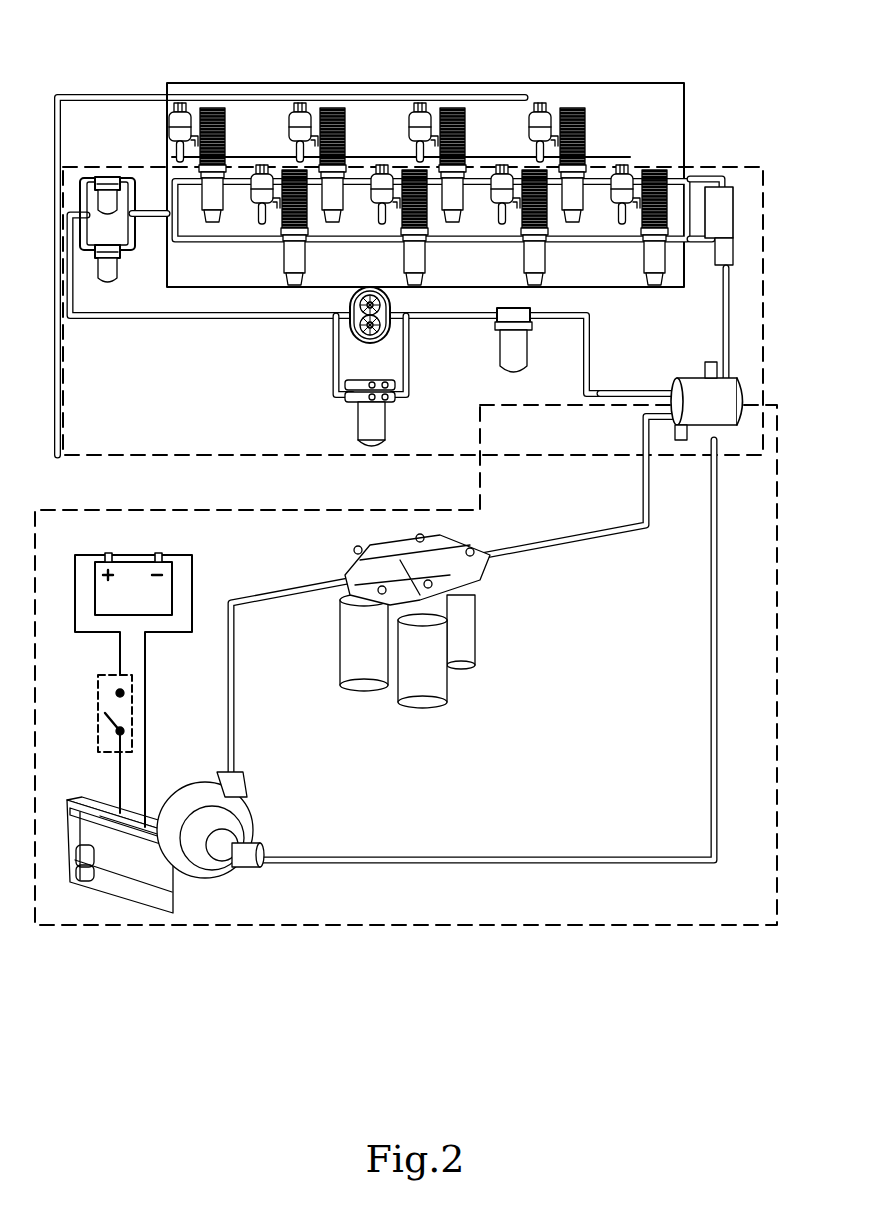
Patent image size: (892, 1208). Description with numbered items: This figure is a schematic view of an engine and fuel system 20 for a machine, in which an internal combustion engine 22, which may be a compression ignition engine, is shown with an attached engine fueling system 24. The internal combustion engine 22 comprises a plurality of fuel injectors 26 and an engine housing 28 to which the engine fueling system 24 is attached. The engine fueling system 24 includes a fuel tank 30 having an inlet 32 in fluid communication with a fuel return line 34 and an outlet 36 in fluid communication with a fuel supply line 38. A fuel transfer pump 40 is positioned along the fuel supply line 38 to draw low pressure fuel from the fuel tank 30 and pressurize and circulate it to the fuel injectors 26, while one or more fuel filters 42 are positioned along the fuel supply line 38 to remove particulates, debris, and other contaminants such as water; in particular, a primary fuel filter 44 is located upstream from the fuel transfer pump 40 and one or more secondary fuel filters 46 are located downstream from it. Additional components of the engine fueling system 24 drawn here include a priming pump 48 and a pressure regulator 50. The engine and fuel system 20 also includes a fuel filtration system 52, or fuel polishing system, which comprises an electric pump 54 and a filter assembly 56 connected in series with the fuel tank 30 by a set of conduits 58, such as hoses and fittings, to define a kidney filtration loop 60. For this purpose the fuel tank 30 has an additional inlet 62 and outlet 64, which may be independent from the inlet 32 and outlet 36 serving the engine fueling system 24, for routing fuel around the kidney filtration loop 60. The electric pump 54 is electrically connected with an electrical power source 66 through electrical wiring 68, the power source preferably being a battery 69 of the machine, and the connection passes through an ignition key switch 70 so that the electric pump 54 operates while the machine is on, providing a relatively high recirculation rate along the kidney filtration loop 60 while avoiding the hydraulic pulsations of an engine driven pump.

The engine and fuel system 20 is at (806, 173).
The internal combustion engine 22 is at (675, 52).
The engine fueling system 24 is at (763, 250).
The fuel injectors 26 is at (180, 103).
The engine housing 28 is at (619, 83).
The fuel tank 30 is at (745, 388).
The inlet 32 is at (740, 366).
The fuel return line 34 is at (733, 300).
The outlet 36 is at (660, 383).
The fuel supply line 38 is at (268, 319).
The fuel transfer pump 40 is at (362, 343).
The fuel filters 42 is at (95, 190).
The primary fuel filter 44 is at (530, 355).
The secondary fuel filters 46 is at (87, 207).
The priming pump 48 is at (356, 428).
The pressure regulator 50 is at (735, 212).
The fuel filtration system 52 is at (777, 600).
The electric pump 54 is at (246, 816).
The filter assembly 56 is at (492, 578).
The conduits 58 is at (566, 532).
The kidney filtration loop 60 is at (526, 639).
The additional inlet 62 is at (662, 430).
The outlet 64 is at (730, 436).
The electrical power source 66 is at (156, 553).
The electrical wiring 68 is at (120, 653).
The battery 69 is at (114, 553).
The ignition key switch 70 is at (98, 700).